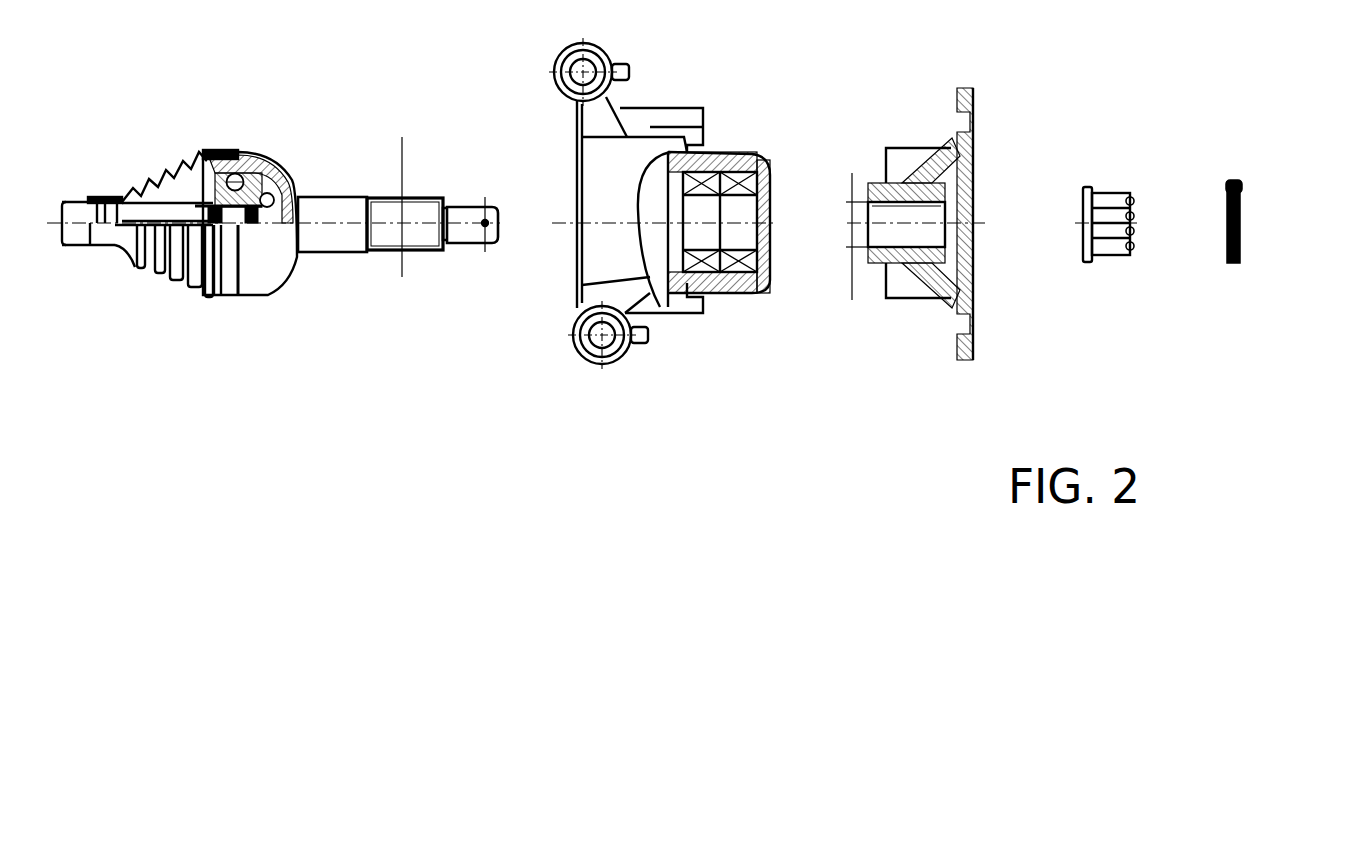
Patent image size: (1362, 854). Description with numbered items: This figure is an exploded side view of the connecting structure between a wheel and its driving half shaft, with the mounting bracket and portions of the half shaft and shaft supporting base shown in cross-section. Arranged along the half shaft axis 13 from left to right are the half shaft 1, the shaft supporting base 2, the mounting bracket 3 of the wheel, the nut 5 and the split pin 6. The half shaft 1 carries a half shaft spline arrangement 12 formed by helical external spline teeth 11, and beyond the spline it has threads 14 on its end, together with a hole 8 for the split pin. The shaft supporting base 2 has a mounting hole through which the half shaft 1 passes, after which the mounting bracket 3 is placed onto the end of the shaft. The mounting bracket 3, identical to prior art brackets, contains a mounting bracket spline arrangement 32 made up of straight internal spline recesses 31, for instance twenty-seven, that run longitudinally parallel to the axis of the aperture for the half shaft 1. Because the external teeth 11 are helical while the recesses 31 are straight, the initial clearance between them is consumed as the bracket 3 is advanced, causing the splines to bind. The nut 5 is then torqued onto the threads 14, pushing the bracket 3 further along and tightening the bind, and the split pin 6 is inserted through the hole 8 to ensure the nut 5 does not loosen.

The half shaft 1 is at (322, 183).
The helical external spline teeth 11 is at (385, 207).
The half shaft spline arrangement 12 is at (413, 237).
The half shaft axis 13 is at (54, 252).
The threads on the end of the half shaft 14 is at (460, 248).
The hole for the split pin 8 is at (498, 225).
The shaft supporting base 2 is at (593, 184).
The mounting bracket of the wheel 3 is at (890, 204).
The straight internal spline recesses 31 is at (844, 236).
The mounting bracket spline arrangement 32 is at (930, 214).
The nut 5 is at (1134, 184).
The split pin 6 is at (1274, 190).